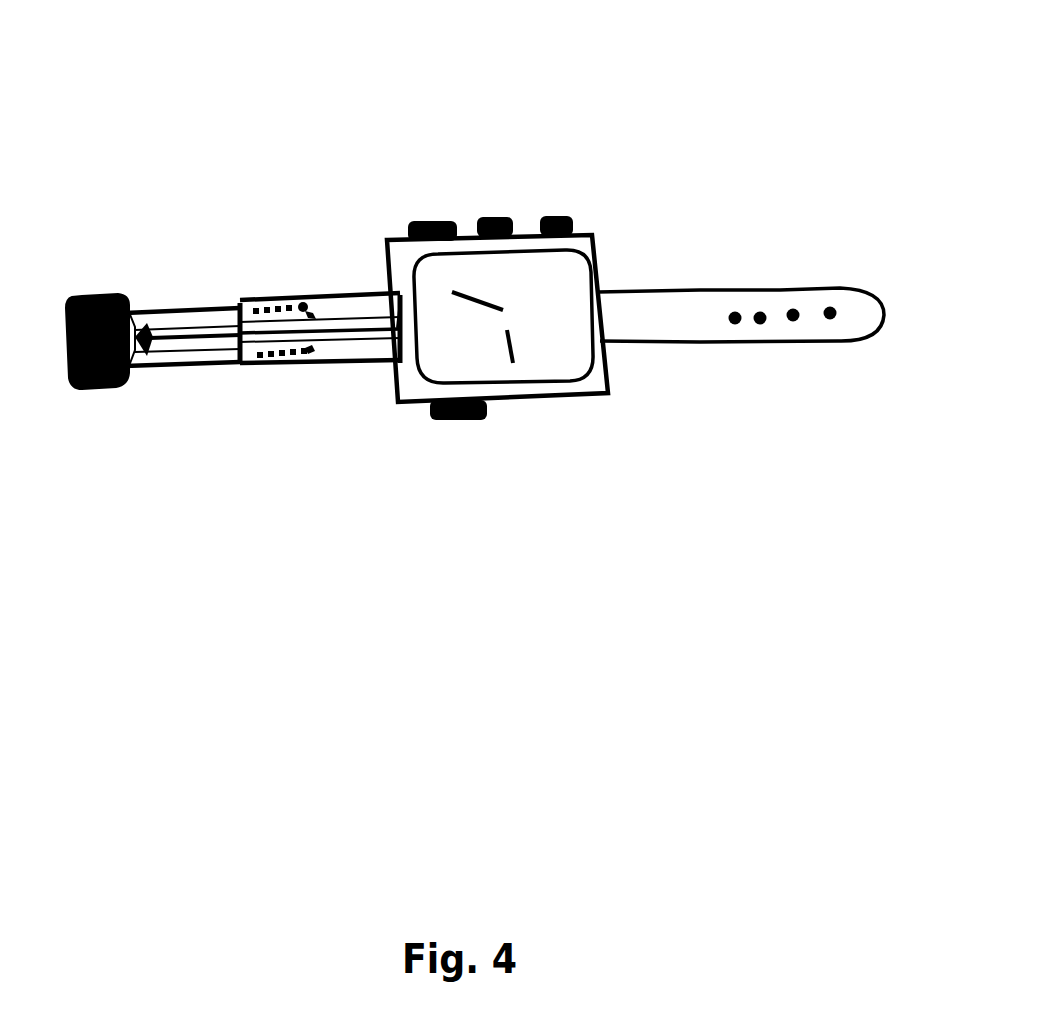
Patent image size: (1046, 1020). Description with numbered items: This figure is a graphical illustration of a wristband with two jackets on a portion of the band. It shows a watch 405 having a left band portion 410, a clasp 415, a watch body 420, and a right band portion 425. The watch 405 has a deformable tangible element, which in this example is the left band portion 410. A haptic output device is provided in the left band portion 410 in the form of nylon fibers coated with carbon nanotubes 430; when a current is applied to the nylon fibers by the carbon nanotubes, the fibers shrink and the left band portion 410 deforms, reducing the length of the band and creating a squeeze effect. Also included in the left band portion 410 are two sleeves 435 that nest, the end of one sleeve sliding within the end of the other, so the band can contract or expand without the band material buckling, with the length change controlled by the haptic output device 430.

The watch 405 is at (603, 115).
The left band portion 410 is at (243, 286).
The clasp 415 is at (108, 280).
The watch body 420 is at (495, 364).
The right band portion 425 is at (638, 323).
The nylon fibers coated with carbon nanotubes 430 is at (338, 311).
The sleeves 435 is at (218, 372).